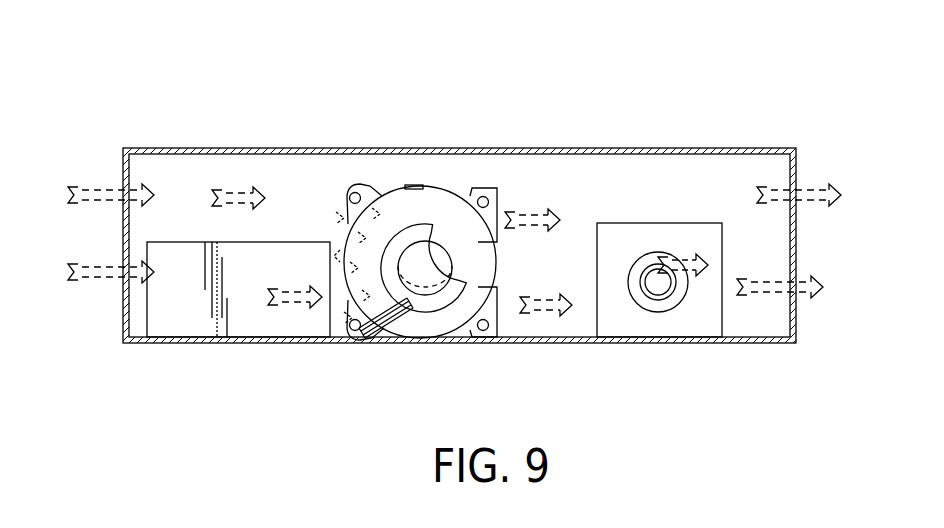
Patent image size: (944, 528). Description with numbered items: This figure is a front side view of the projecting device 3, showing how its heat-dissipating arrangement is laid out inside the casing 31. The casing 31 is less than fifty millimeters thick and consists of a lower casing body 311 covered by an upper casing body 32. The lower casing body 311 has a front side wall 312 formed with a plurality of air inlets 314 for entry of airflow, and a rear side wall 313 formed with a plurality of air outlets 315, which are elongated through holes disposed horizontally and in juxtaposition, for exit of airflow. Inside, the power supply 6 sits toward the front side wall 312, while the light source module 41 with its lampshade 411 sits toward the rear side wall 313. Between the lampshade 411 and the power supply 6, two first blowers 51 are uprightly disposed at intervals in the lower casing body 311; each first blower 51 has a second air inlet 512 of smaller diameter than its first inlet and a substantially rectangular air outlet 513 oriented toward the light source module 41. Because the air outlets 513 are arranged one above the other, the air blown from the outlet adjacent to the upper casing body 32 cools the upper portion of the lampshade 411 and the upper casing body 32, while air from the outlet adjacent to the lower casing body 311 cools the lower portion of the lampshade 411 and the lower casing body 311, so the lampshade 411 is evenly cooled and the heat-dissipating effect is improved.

The projecting device 3 is at (165, 69).
The casing 31 is at (783, 349).
The upper casing body 32 is at (760, 150).
The lower casing body 311 is at (717, 340).
The front side wall 312 is at (125, 170).
The rear side wall 313 is at (795, 167).
The air inlets 314 is at (125, 185).
The air outlets 315 is at (795, 238).
The power supply 6 is at (200, 308).
The first blower 51 is at (442, 253).
The second air inlet 512 is at (430, 308).
The air outlet 513 is at (497, 204).
The light source module 41 is at (650, 217).
The lampshade 411 is at (620, 223).